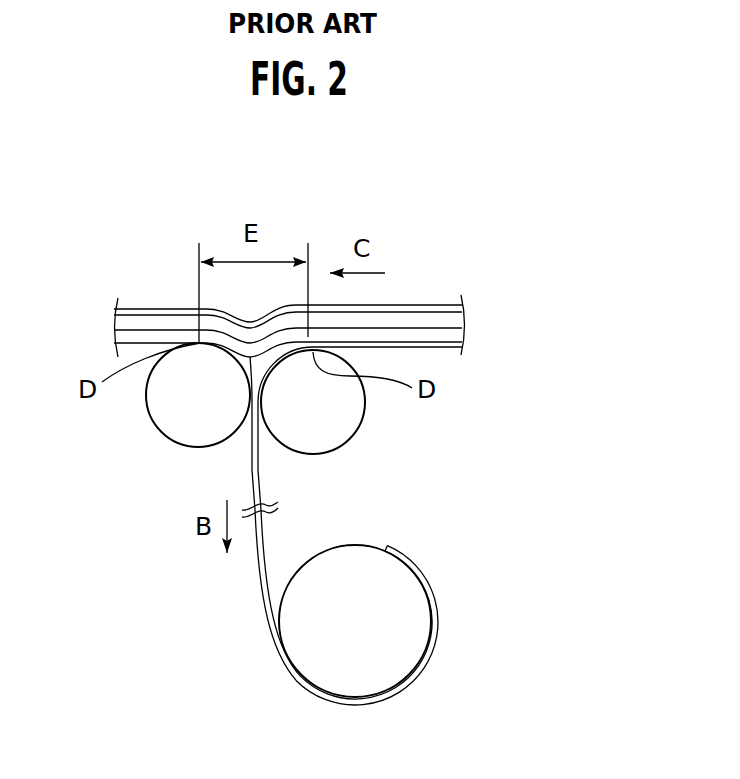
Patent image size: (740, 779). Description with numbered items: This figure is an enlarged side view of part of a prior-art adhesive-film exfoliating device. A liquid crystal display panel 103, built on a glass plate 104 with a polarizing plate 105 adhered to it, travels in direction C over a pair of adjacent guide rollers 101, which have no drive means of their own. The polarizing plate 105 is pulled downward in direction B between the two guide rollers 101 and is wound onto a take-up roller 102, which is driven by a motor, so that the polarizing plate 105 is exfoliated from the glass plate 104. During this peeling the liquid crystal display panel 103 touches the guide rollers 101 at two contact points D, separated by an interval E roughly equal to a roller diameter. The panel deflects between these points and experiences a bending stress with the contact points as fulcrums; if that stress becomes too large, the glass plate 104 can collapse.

The guide rollers 101 is at (175, 423).
The take-up roller 102 is at (412, 628).
The liquid crystal display panel 103 is at (470, 288).
The glass plate 104 is at (165, 338).
The polarizing plate 105 is at (428, 305).